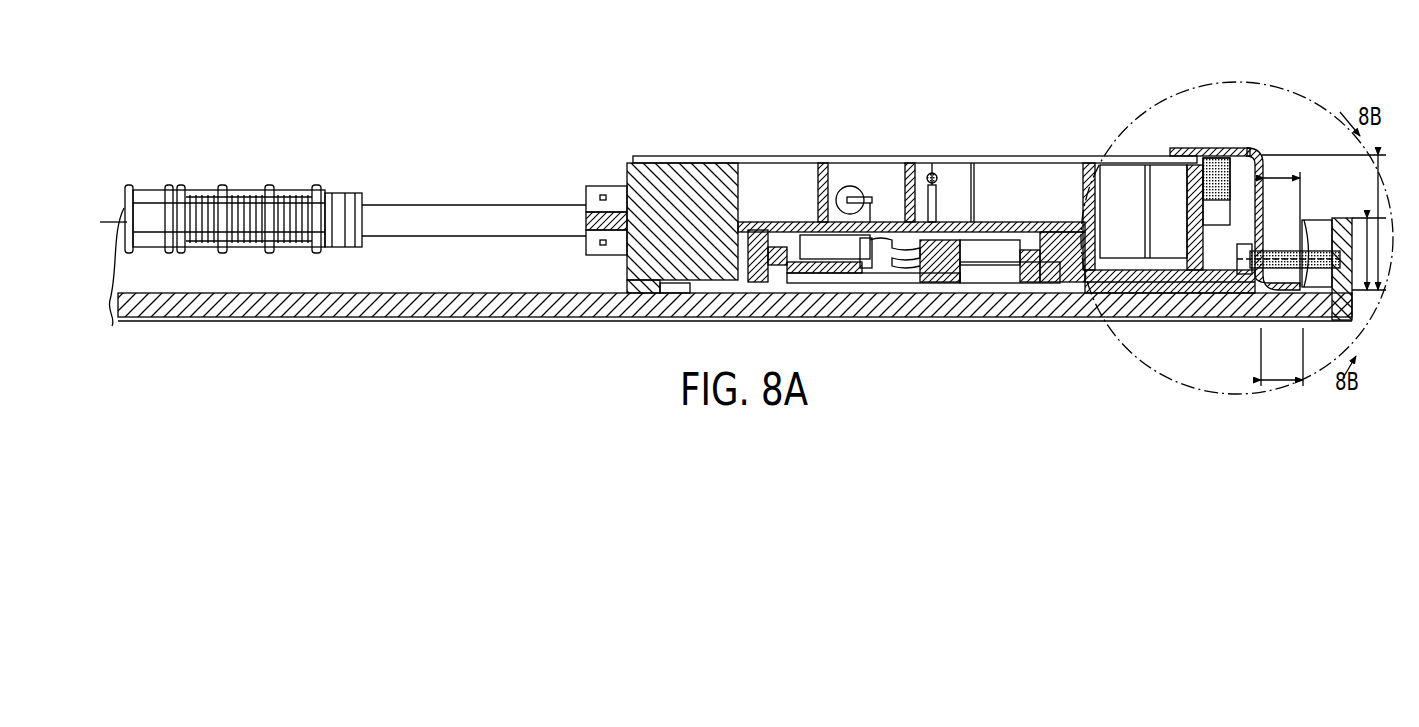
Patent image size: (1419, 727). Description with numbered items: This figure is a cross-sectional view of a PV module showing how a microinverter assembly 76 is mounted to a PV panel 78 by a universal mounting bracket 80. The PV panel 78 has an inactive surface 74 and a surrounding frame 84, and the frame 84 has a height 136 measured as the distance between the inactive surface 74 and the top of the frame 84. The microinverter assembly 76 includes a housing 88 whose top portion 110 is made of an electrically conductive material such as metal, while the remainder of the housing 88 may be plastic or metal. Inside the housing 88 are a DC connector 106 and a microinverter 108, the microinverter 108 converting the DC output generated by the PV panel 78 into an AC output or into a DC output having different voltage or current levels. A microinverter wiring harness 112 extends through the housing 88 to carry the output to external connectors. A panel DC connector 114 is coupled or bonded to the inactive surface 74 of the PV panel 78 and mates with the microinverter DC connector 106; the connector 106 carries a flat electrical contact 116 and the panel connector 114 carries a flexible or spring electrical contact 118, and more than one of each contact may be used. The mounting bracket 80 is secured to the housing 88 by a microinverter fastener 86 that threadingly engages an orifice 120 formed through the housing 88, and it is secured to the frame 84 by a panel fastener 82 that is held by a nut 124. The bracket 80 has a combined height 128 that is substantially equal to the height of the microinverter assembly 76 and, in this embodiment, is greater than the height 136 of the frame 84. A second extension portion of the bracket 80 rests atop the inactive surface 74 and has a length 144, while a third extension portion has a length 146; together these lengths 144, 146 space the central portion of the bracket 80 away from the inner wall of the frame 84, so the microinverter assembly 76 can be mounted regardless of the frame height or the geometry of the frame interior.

The inactive surface 74 is at (525, 293).
The microinverter assembly 76 is at (712, 96).
The PV panel 78 is at (1018, 322).
The universal mounting bracket 80 is at (1220, 155).
The panel fastener 82 is at (1325, 320).
The frame 84 is at (1355, 305).
The microinverter fastener 86 is at (1255, 150).
The housing 88 is at (665, 157).
The DC connector 106 is at (828, 243).
The microinverter 108 is at (1015, 180).
The top portion 110 is at (727, 157).
The microinverter wiring harness 112 is at (470, 205).
The DC connector 114 is at (852, 262).
The electrical contact 116 is at (893, 238).
The electrical contact 118 is at (905, 265).
The orifice 120 is at (1195, 167).
The nut 124 is at (1250, 292).
The combined height 128 is at (1376, 190).
The height 136 is at (1370, 250).
The length 144 is at (1280, 388).
The length 146 is at (1282, 176).